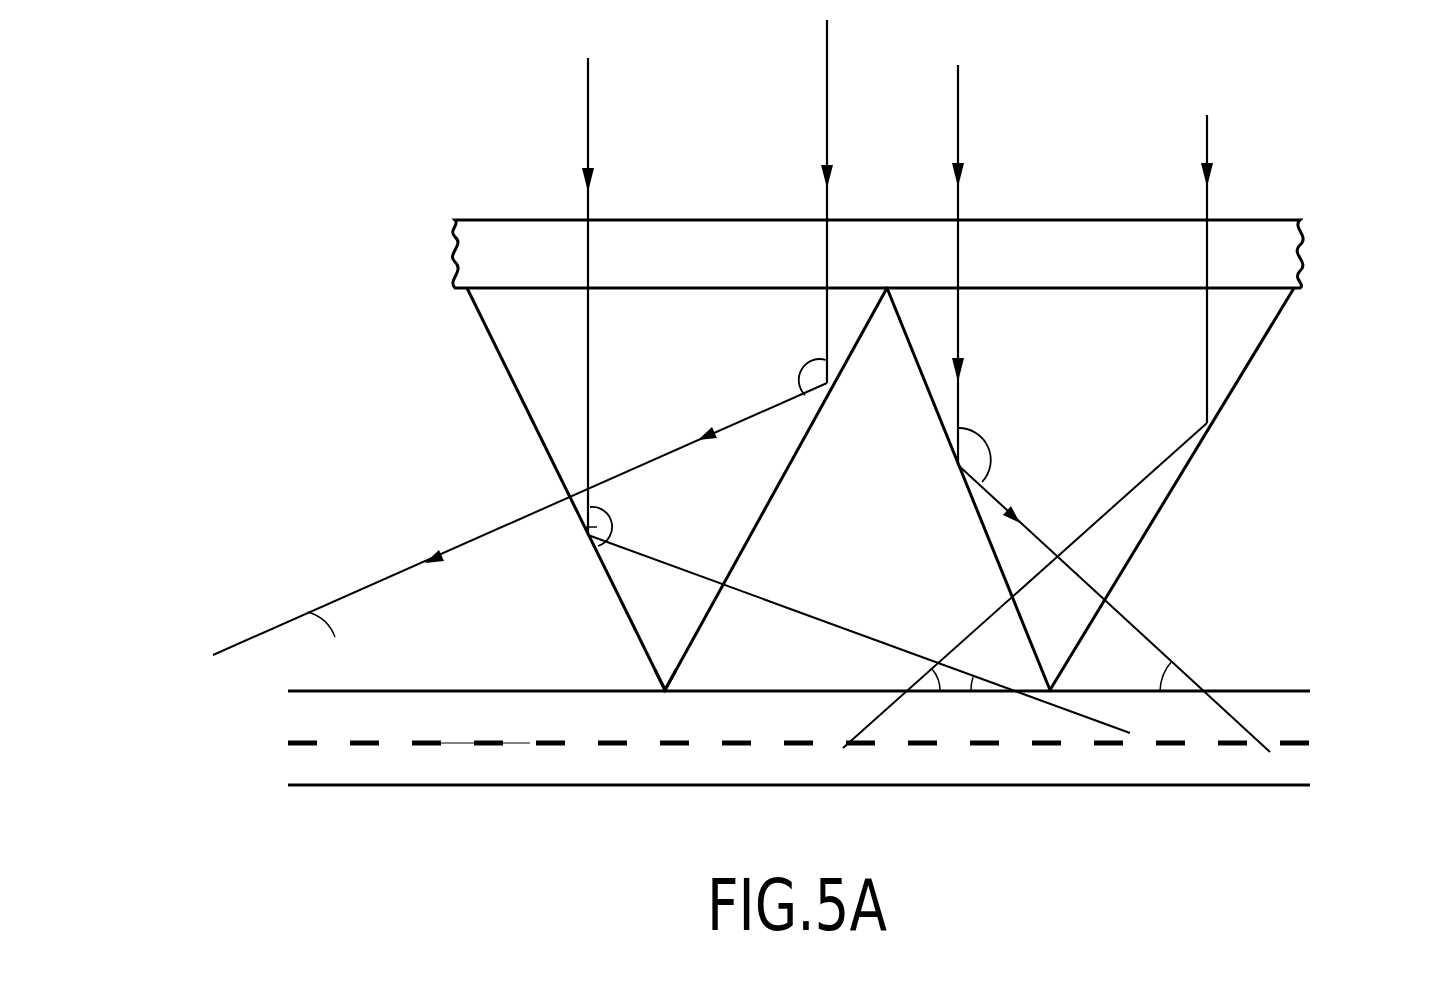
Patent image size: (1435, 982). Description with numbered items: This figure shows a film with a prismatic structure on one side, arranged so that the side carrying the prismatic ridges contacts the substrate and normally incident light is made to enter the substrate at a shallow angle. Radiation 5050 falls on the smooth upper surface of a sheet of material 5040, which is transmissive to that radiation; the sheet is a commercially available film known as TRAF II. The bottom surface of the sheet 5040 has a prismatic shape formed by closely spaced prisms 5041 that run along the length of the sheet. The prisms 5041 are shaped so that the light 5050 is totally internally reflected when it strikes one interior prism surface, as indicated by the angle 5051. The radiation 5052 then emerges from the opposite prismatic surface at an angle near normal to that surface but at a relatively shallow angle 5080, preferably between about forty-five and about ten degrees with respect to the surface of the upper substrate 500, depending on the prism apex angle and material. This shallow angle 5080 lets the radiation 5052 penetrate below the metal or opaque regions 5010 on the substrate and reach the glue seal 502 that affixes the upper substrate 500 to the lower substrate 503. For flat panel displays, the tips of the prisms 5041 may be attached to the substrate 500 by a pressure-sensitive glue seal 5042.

The upper substrate 500 is at (1298, 717).
The glue seal 502 is at (982, 747).
The lower substrate 503 is at (1300, 763).
The metal or opaque regions 5010 is at (518, 745).
The sheet of material 5040 is at (492, 199).
The prisms 5041 is at (1273, 218).
The pressure-sensitive glue seal 5042 is at (660, 688).
The radiation 5050 is at (1178, 138).
The angle of total internal reflection 5051 is at (803, 358).
The emerging radiation 5052 is at (310, 589).
The shallow angle 5080 is at (335, 690).